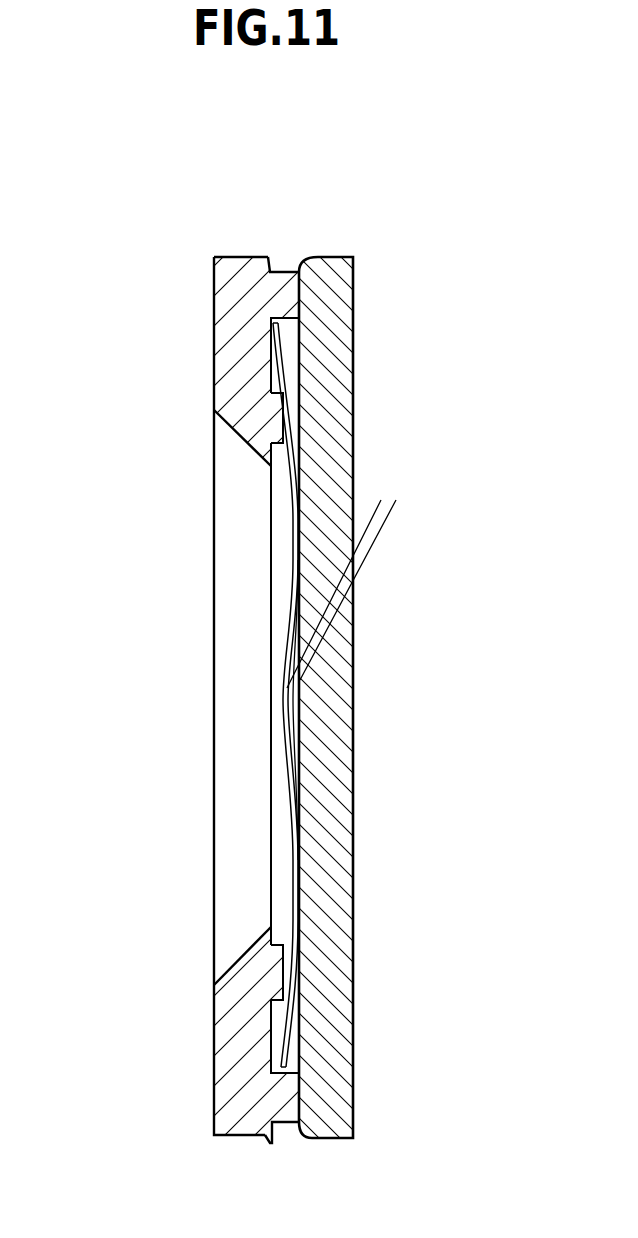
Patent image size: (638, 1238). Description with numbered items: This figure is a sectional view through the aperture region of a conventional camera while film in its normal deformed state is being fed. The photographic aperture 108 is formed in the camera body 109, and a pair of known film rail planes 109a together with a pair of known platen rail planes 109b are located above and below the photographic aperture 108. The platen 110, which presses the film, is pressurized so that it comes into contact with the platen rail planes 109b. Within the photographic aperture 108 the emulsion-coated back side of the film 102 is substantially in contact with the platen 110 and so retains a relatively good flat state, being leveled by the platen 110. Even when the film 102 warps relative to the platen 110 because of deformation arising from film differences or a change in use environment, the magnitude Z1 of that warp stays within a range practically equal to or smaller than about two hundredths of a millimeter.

The film 102 is at (283, 748).
The photographic aperture 108 is at (245, 884).
The camera body 109 is at (214, 302).
The film rail planes 109a is at (283, 416).
The platen rail planes 109b is at (298, 272).
The platen 110 is at (354, 300).
The magnitude of the warp Z1 is at (422, 509).